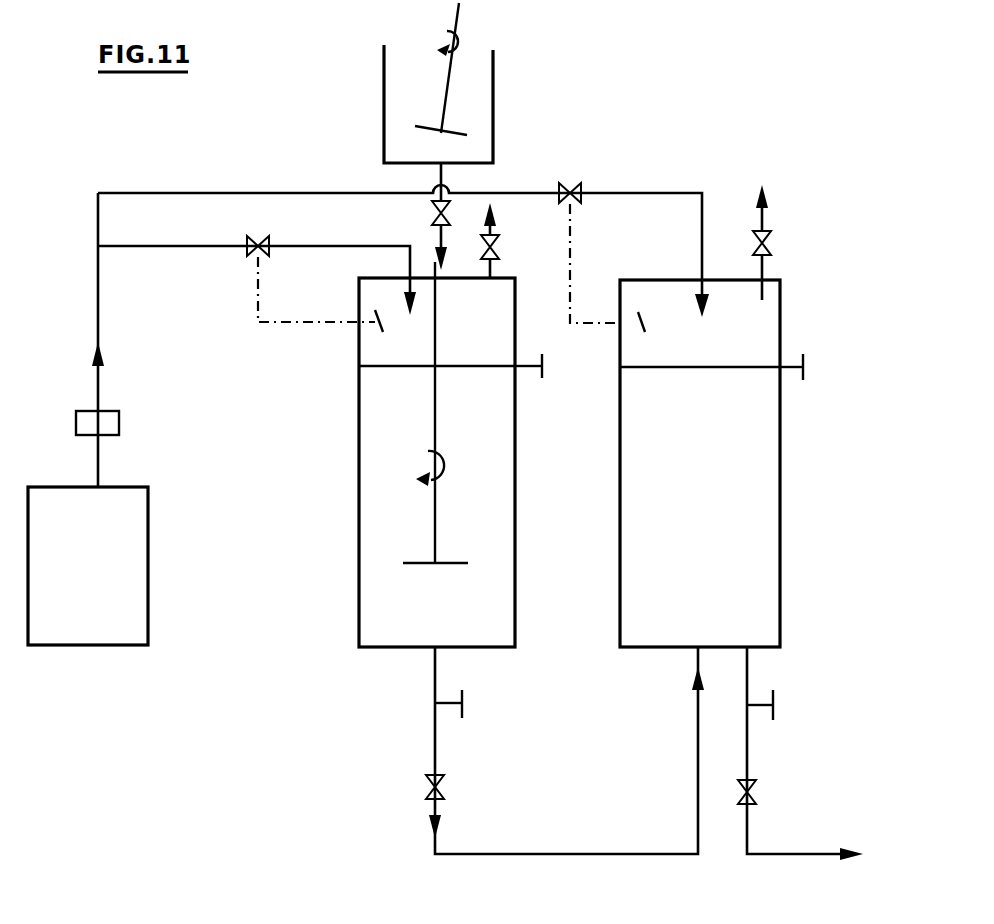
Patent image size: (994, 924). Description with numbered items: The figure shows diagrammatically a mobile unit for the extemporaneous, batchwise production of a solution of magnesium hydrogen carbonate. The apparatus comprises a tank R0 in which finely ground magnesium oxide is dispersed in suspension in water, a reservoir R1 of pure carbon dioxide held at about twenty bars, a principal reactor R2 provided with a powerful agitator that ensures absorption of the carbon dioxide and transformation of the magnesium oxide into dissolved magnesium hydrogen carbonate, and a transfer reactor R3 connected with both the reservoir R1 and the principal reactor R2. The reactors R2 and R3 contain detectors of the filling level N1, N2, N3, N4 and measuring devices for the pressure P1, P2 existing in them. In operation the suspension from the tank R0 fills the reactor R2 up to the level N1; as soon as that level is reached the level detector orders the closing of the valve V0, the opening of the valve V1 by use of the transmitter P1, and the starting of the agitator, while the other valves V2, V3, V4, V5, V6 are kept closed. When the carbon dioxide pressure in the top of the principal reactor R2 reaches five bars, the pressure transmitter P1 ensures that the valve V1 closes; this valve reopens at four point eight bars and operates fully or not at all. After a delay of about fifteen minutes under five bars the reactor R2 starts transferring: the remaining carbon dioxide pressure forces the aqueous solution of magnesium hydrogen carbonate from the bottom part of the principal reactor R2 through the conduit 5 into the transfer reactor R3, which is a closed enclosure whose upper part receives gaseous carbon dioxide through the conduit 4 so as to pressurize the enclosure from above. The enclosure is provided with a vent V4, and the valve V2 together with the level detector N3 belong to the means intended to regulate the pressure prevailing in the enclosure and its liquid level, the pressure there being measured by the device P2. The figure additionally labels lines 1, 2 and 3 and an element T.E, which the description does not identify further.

The pipe junction / crossover of feed line 1 is at (446, 171).
The feed pipe from reservoir R1 2 is at (97, 319).
The pipe from valve V1 to reactor R2 3 is at (188, 247).
The conduit 4 is at (243, 193).
The conduit 5 is at (590, 855).
The tank R0 is at (438, 83).
The reservoir R1 is at (88, 566).
The principal reactor R2 is at (437, 454).
The transfer reactor R3 is at (700, 463).
The valve V0 is at (419, 235).
The valve V1 is at (311, 264).
The valve V2 is at (508, 240).
The valve V3 is at (589, 239).
The vent V4 is at (780, 242).
The valve V5 is at (454, 792).
The valve V6 is at (768, 796).
The filling level detector N1 is at (546, 373).
The filling level detector N2 is at (466, 712).
The filling level detector N3 is at (809, 376).
The filling level detector N4 is at (782, 713).
The pressure transmitter P1 is at (393, 335).
The pressure measuring device P2 is at (657, 336).
The temperature element T.E is at (120, 424).